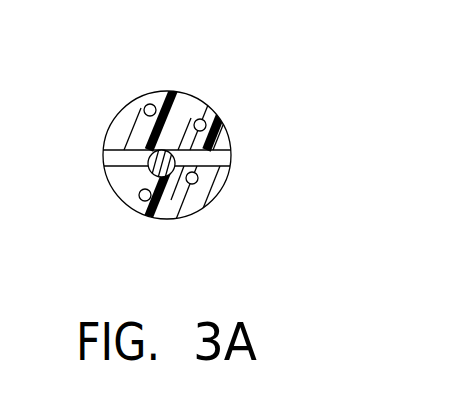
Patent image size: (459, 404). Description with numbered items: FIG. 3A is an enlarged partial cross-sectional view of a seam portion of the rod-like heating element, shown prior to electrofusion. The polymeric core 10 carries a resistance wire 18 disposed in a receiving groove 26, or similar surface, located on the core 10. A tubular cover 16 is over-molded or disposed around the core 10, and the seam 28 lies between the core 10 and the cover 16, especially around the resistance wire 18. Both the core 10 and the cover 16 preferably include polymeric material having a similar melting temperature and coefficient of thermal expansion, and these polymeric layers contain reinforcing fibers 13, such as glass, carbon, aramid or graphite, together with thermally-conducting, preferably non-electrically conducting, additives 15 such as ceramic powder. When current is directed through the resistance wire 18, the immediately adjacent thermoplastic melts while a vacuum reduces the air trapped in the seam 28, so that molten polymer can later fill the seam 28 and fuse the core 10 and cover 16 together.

The core 10 is at (146, 166).
The reinforcing fibers 13 is at (111, 130).
The thermally-conducting additives 15 is at (148, 104).
The tubular cover 16 is at (183, 112).
The resistance wire 18 is at (171, 200).
The receiving groove 26 is at (152, 172).
The seam 28 is at (218, 157).